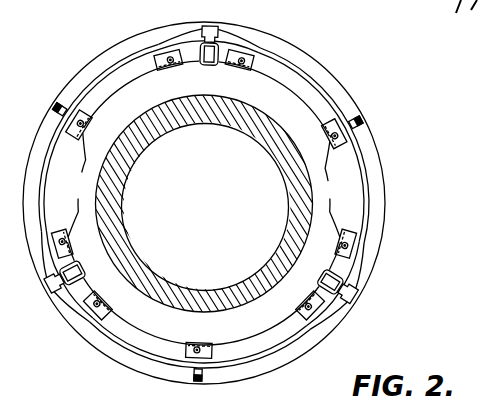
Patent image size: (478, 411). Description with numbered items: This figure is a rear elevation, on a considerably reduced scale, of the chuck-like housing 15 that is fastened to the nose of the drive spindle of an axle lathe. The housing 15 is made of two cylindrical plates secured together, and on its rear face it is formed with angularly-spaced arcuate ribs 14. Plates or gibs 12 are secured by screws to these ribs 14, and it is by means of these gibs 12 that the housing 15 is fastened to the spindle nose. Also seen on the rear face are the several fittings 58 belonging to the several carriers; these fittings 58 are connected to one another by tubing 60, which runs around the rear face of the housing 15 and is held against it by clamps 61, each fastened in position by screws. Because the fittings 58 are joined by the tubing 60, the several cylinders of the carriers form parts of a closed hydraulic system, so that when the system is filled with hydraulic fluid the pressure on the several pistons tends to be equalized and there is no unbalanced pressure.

The plates or gibs 12 is at (87, 175).
The arcuate ribs 14 is at (112, 88).
The housing 15 is at (383, 197).
The fittings 58 is at (213, 27).
The tubing 60 is at (112, 66).
The clamps 61 is at (60, 112).